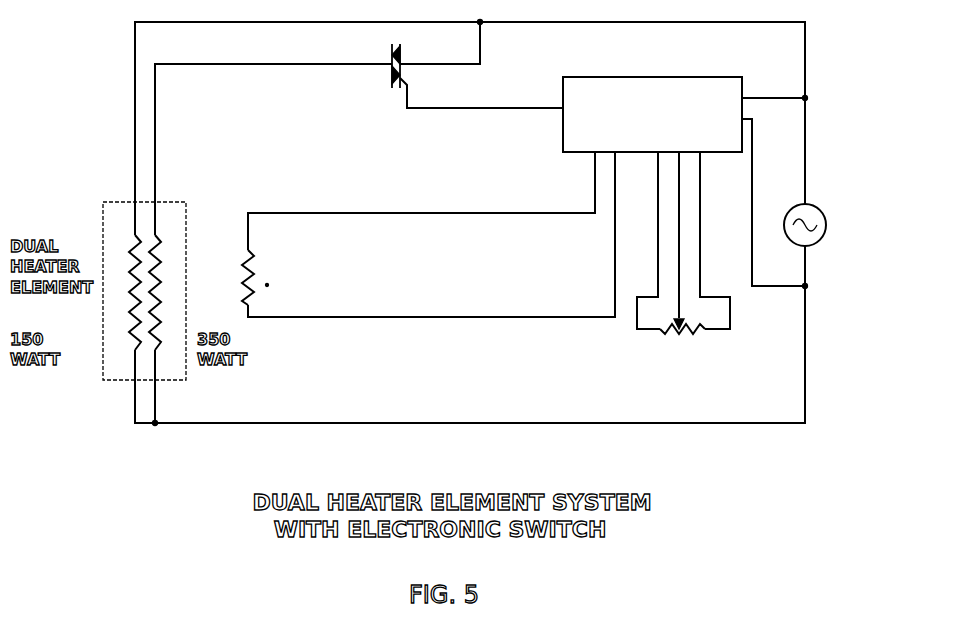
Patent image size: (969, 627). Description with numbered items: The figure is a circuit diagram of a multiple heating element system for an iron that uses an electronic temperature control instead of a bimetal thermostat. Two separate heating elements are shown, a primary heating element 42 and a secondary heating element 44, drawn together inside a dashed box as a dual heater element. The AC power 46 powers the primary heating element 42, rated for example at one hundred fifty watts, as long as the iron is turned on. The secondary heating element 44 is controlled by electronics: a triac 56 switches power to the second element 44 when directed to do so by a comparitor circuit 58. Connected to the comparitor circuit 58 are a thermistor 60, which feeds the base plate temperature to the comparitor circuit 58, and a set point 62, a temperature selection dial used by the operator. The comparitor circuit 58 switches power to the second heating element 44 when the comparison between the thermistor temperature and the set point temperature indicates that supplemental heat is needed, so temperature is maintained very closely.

The primary heating element 42 is at (126, 254).
The secondary heating element 44 is at (160, 258).
The 110 VAC power 46 is at (825, 240).
The triac 56 is at (412, 78).
The comparitor circuit 58 is at (657, 76).
The thermistor 60 is at (243, 265).
The set point 62 is at (690, 337).